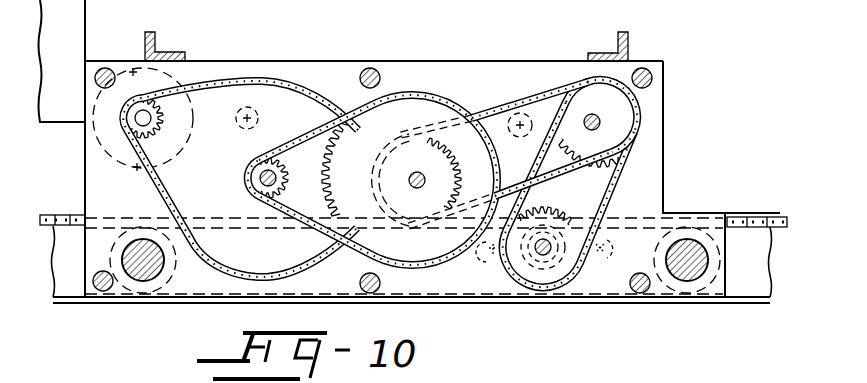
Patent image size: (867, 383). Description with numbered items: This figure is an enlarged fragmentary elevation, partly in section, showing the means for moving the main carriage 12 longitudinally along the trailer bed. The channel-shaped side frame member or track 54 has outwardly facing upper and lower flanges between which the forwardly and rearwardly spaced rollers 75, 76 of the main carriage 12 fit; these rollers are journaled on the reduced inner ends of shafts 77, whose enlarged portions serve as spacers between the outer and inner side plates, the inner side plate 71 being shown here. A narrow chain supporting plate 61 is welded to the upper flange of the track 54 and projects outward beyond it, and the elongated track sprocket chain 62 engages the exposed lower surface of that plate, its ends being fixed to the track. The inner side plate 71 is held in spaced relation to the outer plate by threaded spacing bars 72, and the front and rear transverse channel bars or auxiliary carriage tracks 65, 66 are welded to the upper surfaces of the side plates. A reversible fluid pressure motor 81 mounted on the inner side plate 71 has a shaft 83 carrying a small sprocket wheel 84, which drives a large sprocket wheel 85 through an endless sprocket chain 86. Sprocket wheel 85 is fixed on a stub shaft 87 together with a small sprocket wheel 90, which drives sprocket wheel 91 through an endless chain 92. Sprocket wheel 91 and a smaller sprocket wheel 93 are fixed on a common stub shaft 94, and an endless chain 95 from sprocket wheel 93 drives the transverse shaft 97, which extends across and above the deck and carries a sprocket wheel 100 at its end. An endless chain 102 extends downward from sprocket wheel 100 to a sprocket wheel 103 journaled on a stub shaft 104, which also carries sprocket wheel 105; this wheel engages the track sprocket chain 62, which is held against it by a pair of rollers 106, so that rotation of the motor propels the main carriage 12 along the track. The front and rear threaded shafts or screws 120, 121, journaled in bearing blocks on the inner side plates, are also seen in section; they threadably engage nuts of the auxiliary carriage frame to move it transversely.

The main carriage 12 is at (670, 79).
The side frame member or track 54 is at (55, 286).
The chain supporting plate 61 is at (70, 208).
The track sprocket chain 62 is at (67, 228).
The front transverse channel bar or auxiliary carriage track 65 is at (172, 51).
The rear transverse channel bar or auxiliary carriage track 66 is at (631, 52).
The inner main carriage side plate 71 is at (455, 70).
The spacing bar 72 is at (95, 77).
The roller or wheel 75 is at (173, 293).
The roller or wheel 76 is at (713, 283).
The shaft or bar 77 is at (163, 263).
The reversible motor 81 is at (137, 63).
The motor shaft 83 is at (140, 124).
The sprocket wheel 84 is at (136, 167).
The sprocket wheel 85 is at (225, 207).
The endless sprocket chain 86 is at (248, 78).
The stub shaft 87 is at (260, 164).
The sprocket wheel 90 is at (292, 167).
The sprocket wheel 91 is at (405, 122).
The endless sprocket chain 92 is at (403, 93).
The sprocket wheel 93 is at (453, 173).
The stub shaft 94 is at (417, 170).
The endless sprocket chain 95 is at (547, 96).
The transverse shaft 97 is at (602, 109).
The sprocket wheel 100 is at (625, 131).
The endless sprocket chain 102 is at (612, 187).
The sprocket wheel 103 is at (557, 204).
The stub shaft 104 is at (553, 253).
The sprocket wheel 105 is at (545, 263).
The roller 106 is at (493, 256).
The front transverse threaded shaft or screw 120 is at (262, 120).
The rear transverse threaded shaft or screw 121 is at (520, 134).